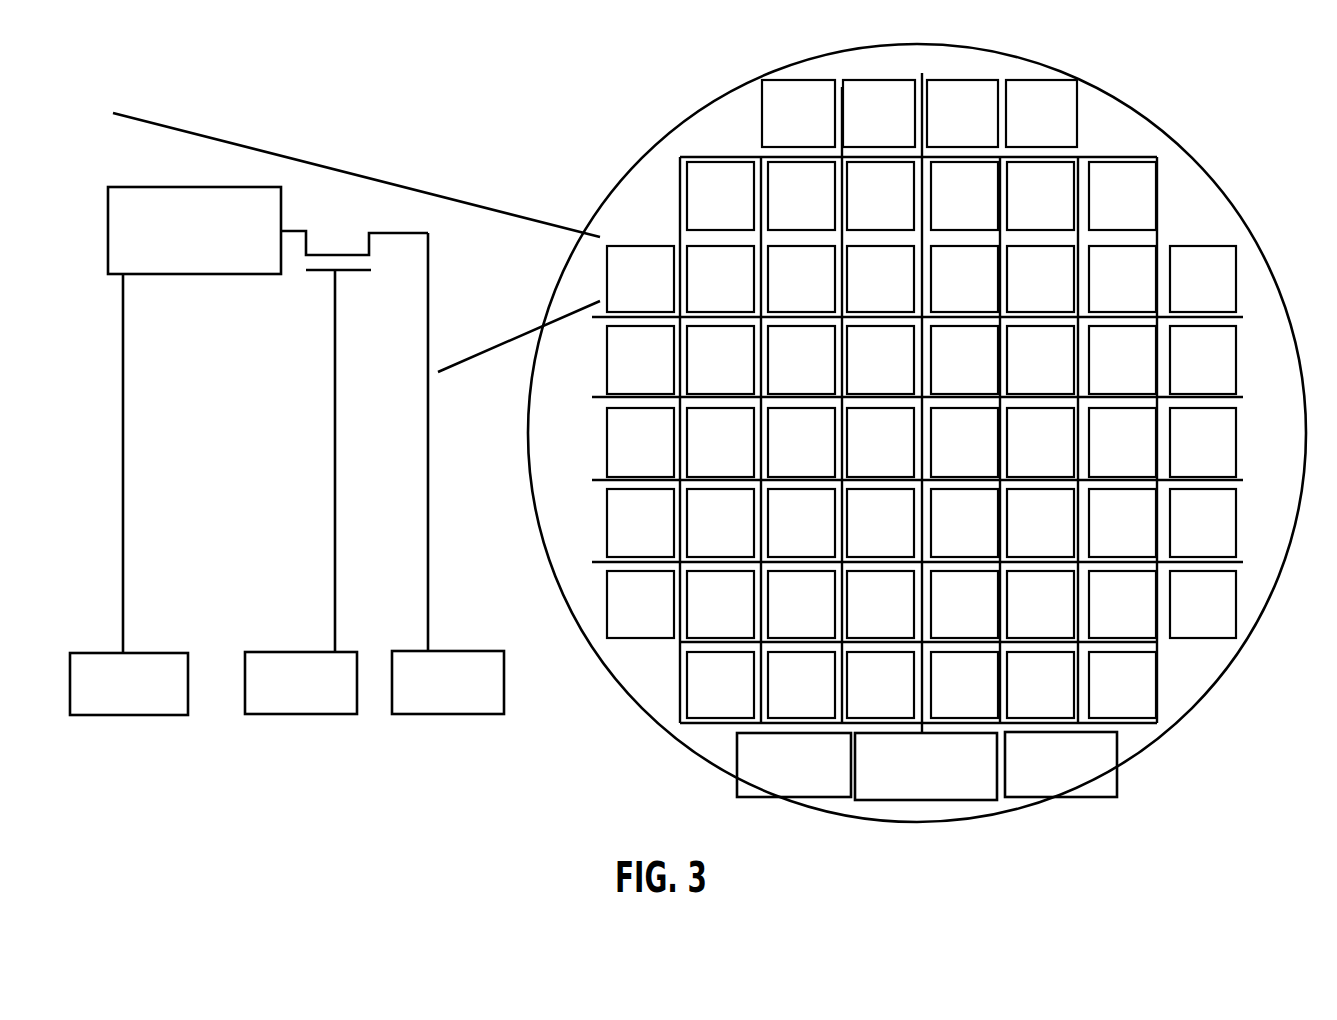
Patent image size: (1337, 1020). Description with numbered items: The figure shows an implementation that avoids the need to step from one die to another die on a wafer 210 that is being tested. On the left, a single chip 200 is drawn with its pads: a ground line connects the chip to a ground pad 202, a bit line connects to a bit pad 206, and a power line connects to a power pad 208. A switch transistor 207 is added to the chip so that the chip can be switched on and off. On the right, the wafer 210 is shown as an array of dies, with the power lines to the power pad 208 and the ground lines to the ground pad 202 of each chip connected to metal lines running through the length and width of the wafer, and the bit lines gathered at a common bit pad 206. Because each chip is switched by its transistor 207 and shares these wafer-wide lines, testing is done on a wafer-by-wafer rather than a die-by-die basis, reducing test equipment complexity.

The chip 200 is at (191, 274).
The ground pad 202 is at (145, 653).
The bit line pad 206 is at (300, 714).
The switch transistor 207 is at (352, 270).
The power pad 208 is at (450, 714).
The wafer 210 is at (1203, 690).